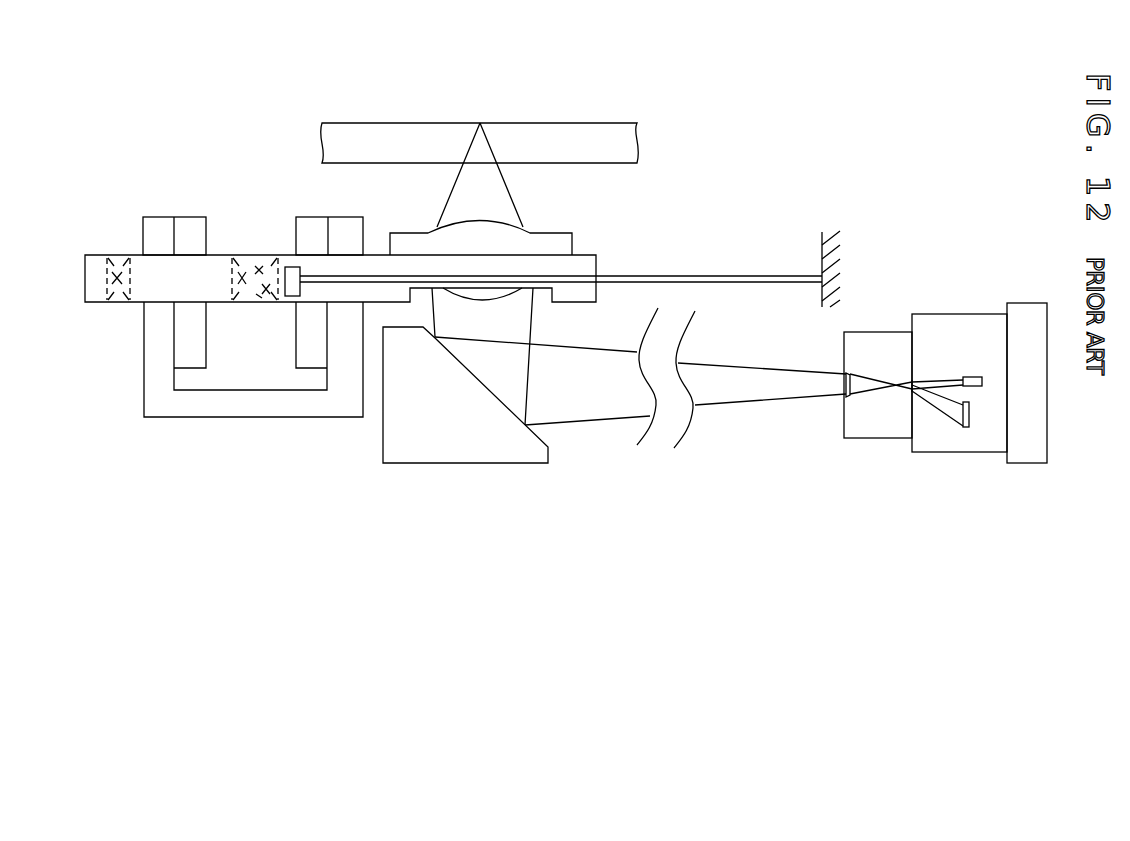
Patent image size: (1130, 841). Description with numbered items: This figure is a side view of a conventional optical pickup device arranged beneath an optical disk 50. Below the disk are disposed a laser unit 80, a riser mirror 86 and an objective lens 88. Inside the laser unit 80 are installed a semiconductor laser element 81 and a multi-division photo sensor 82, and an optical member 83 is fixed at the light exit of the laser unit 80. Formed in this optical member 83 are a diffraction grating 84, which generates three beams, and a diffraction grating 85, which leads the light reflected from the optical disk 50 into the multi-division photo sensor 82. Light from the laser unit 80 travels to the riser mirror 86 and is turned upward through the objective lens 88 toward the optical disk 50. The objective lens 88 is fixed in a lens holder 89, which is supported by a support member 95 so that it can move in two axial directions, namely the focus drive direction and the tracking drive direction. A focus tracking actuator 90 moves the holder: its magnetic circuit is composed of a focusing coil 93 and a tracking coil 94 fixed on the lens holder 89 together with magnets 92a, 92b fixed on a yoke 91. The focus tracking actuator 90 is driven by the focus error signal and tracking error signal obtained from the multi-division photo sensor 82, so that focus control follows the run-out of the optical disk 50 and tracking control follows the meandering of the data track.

The optical disk 50 is at (569, 132).
The laser unit 80 is at (961, 298).
The semiconductor laser element 81 is at (968, 379).
The multi-division photo sensor 82 is at (960, 428).
The optical member 83 is at (876, 430).
The diffraction grating 84 is at (913, 387).
The diffraction grating 85 is at (840, 387).
The riser mirror 86 is at (470, 453).
The objective lens 88 is at (505, 232).
The lens holder 89 is at (142, 265).
The focus tracking actuator 90 is at (128, 428).
The yoke 91 is at (257, 407).
The magnet 92a is at (310, 223).
The magnet 92b is at (160, 227).
The focusing coil 93 is at (230, 285).
The tracking coil 94 is at (256, 288).
The support member 95 is at (699, 276).